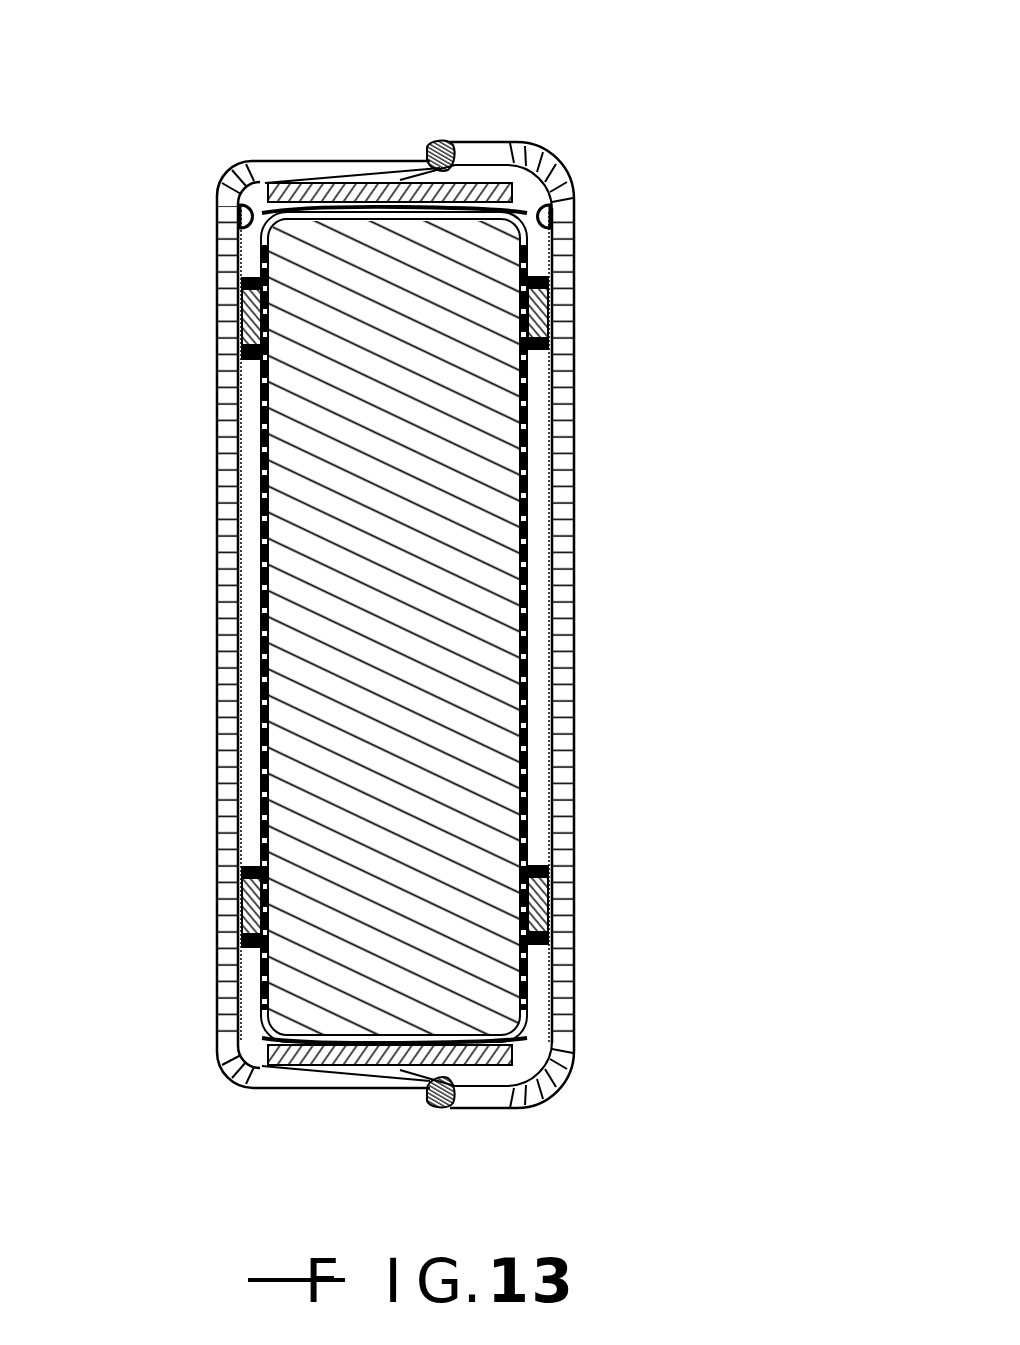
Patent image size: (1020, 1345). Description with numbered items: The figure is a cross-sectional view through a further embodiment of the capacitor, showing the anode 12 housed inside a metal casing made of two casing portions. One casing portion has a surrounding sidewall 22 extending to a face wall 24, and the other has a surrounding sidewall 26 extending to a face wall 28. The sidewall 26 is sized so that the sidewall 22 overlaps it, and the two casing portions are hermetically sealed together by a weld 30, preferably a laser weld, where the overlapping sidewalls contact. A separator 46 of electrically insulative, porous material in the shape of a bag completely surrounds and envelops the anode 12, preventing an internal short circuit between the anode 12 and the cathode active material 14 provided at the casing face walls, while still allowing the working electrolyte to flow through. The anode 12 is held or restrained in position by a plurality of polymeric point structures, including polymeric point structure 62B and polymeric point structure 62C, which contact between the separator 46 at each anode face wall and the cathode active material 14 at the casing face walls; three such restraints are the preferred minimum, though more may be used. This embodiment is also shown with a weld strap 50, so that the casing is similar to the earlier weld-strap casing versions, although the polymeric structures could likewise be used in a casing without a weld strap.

The anode 12 is at (465, 458).
The cathode active material 14 is at (240, 212).
The surrounding sidewall 22 is at (482, 141).
The face wall 24 is at (566, 652).
The surrounding sidewall 26 is at (332, 167).
The face wall 28 is at (233, 595).
The weld 30 is at (434, 147).
The separator 46 is at (546, 245).
The weld strap 50 is at (292, 182).
The polymeric point structure 62B is at (240, 327).
The polymeric point structure 62C is at (240, 880).